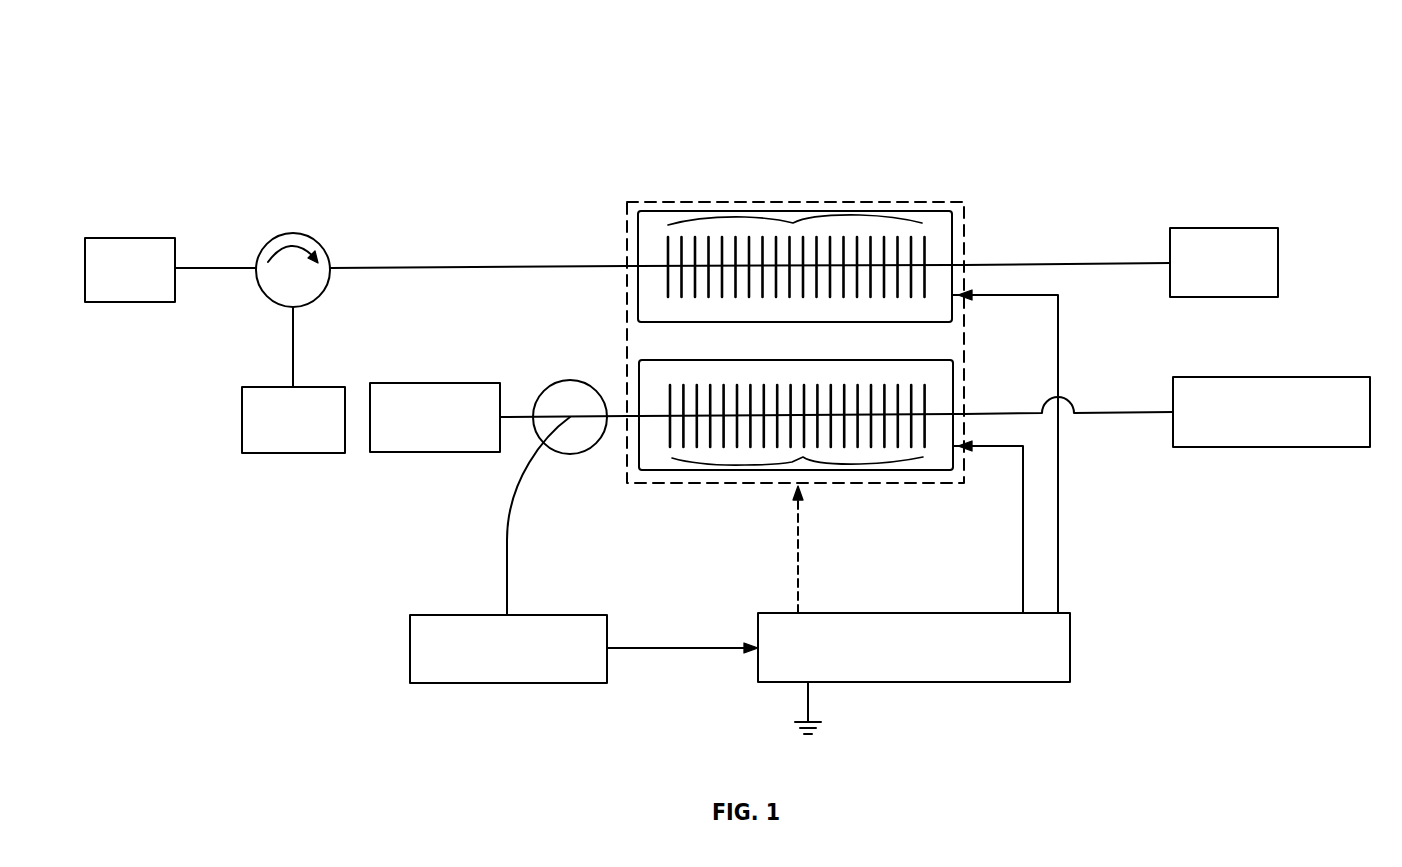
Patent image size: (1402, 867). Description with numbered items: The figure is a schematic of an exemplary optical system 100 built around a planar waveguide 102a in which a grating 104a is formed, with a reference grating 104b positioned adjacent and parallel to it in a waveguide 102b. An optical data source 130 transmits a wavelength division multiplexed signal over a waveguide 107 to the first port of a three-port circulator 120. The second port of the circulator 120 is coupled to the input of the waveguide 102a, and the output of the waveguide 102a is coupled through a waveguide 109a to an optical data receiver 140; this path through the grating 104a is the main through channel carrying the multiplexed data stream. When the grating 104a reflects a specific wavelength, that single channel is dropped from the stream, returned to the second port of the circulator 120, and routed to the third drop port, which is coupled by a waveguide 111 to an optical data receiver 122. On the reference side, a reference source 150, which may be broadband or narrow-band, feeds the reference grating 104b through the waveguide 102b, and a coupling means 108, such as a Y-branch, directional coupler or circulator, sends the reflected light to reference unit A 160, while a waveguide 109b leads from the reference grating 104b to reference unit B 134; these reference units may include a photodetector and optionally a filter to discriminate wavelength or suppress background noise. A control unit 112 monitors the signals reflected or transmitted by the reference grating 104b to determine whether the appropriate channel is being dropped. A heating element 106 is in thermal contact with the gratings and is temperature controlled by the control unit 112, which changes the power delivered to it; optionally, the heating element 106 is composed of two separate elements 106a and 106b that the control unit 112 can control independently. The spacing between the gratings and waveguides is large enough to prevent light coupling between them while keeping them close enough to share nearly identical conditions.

The optical system 100 is at (1243, 95).
The optical data source 130 is at (166, 236).
The waveguide 107 is at (202, 266).
The three-port circulator 120 is at (293, 233).
The waveguide 111 is at (290, 346).
The optical data receiver 122 is at (320, 385).
The planar waveguide 102a is at (458, 265).
The reference source 150 is at (460, 383).
The coupling means 108 is at (556, 380).
The waveguide 102b is at (620, 427).
The reference unit A 160 is at (552, 615).
The heating element 106 is at (932, 197).
The heating element 106a is at (690, 210).
The grating 104a is at (792, 221).
The heating element 106b is at (930, 358).
The reference grating 104b is at (803, 459).
The waveguide 109a is at (1085, 263).
The waveguide 109b is at (1100, 411).
The optical data receiver 140 is at (1265, 228).
The reference unit B 134 is at (1317, 376).
The control unit 112 is at (843, 613).